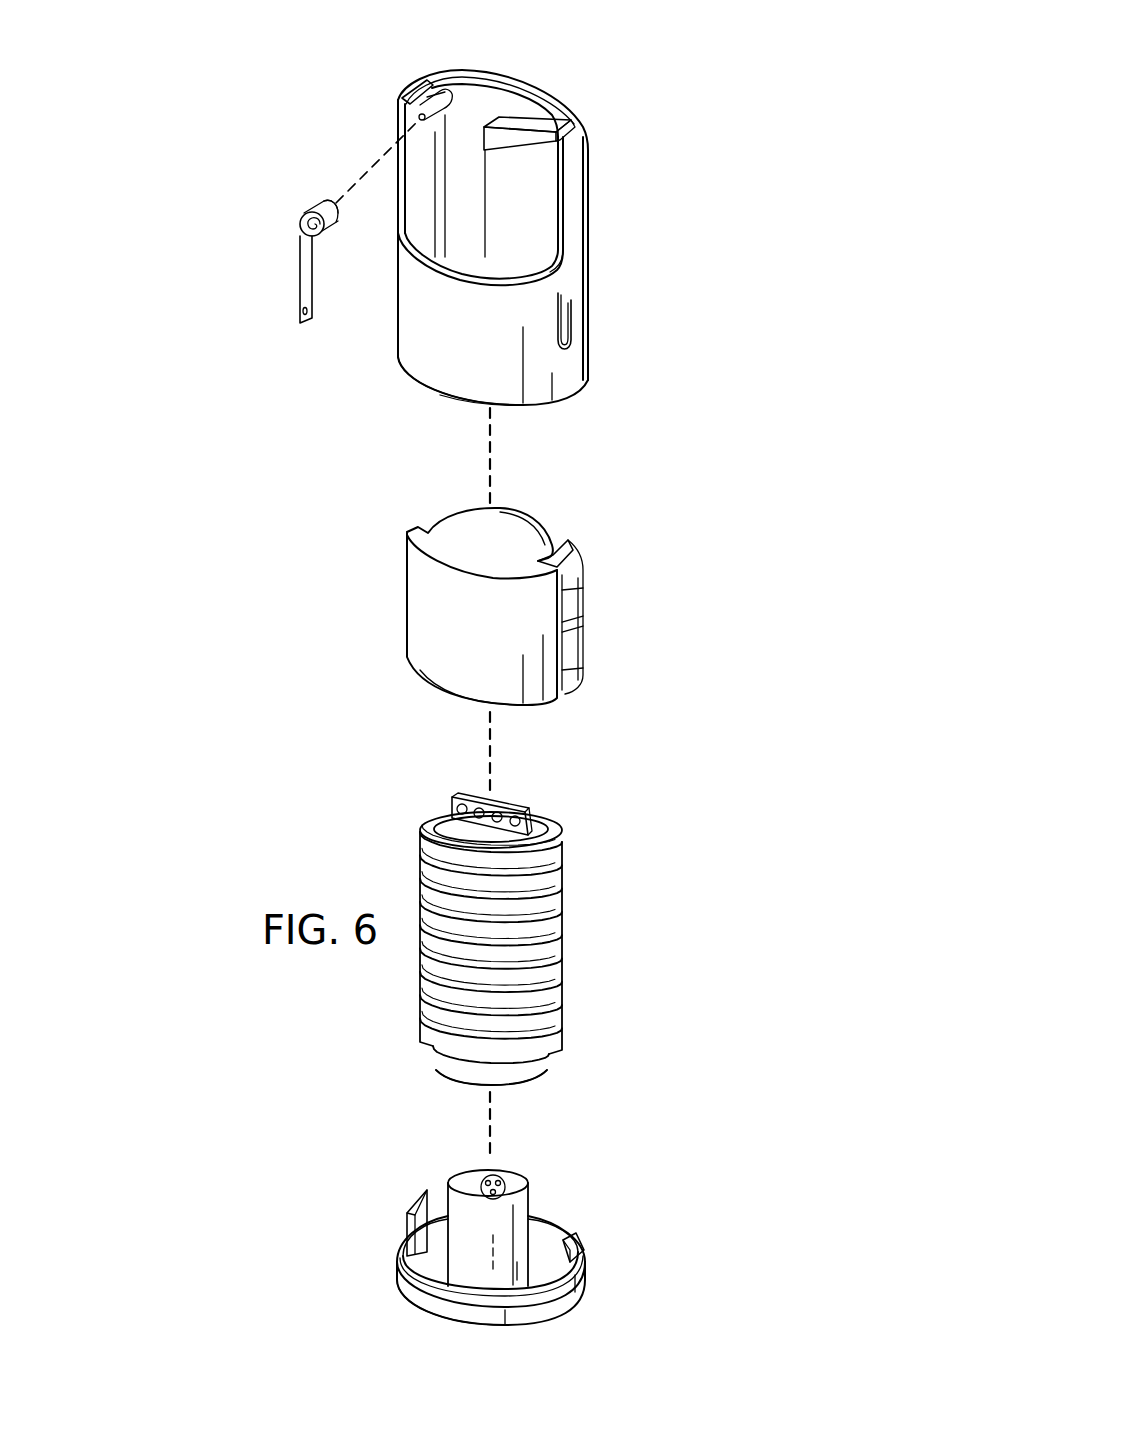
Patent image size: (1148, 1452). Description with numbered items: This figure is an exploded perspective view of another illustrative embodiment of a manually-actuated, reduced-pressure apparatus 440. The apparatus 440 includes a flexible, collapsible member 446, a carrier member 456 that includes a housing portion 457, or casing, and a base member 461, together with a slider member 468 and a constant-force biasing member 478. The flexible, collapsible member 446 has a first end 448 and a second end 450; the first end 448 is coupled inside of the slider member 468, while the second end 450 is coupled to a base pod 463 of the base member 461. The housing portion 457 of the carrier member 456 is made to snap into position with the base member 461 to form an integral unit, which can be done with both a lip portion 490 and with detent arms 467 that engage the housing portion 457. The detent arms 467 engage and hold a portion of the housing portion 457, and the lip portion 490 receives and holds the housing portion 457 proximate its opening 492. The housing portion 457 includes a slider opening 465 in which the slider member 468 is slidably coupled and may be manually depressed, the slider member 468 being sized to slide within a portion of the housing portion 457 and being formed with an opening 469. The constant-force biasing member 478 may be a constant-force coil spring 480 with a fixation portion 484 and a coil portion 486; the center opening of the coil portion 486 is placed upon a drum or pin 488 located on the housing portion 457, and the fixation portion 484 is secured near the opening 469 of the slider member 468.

The manually-actuated, reduced-pressure apparatus 440 is at (700, 88).
The flexible, collapsible member 446 is at (566, 930).
The first end 448 is at (582, 818).
The second end 450 is at (538, 1085).
The carrier member 456 is at (589, 195).
The housing portion 457 is at (420, 372).
The base member 461 is at (588, 1298).
The base pod 463 is at (530, 1208).
The slider opening 465 is at (548, 252).
The detent arms 467 is at (408, 1212).
The slider member 468 is at (408, 590).
The opening 469 is at (430, 688).
The constant-force biasing member 478 is at (299, 275).
The constant-force coil spring 480 is at (300, 219).
The fixation portion 484 is at (308, 318).
The coil portion 486 is at (320, 200).
The pin 488 is at (447, 112).
The lip portion 490 is at (413, 1284).
The opening 492 is at (450, 400).